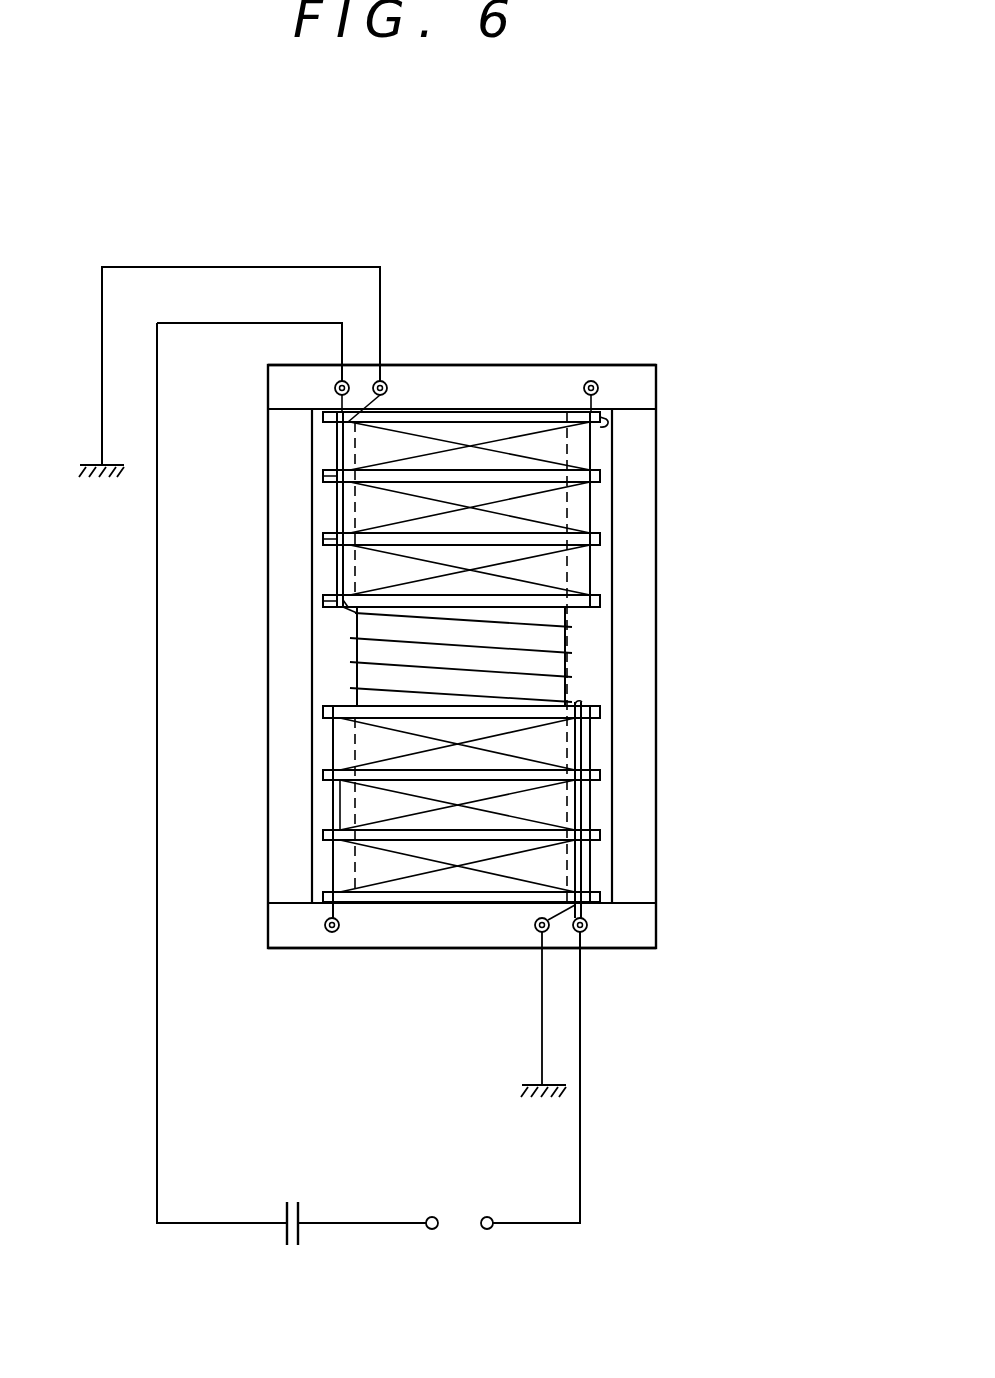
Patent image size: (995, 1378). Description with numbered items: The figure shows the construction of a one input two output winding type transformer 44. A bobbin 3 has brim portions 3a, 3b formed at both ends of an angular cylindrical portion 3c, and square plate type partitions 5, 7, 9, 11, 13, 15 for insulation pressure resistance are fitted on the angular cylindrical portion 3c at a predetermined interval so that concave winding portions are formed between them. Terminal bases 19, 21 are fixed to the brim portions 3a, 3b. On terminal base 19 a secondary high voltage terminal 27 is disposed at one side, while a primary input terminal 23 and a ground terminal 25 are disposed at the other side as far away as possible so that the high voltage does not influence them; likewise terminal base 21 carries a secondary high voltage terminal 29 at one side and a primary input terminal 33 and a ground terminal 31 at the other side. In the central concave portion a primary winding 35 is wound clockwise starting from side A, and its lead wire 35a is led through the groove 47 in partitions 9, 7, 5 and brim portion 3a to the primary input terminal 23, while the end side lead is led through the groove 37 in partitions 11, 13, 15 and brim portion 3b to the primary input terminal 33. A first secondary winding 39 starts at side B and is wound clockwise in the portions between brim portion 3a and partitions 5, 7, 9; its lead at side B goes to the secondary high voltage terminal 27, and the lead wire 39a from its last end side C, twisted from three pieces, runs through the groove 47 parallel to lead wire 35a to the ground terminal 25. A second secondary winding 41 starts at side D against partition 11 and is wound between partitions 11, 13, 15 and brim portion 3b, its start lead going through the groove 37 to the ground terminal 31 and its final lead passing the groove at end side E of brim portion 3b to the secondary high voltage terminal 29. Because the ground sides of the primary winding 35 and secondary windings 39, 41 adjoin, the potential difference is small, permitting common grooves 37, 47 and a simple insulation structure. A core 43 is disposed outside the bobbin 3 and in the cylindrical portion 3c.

The bobbin 3 is at (565, 570).
The brim portion 3a is at (533, 410).
The brim portion 3b is at (427, 905).
The angular cylindrical portion 3c is at (355, 675).
The partition 5 is at (600, 478).
The partition 7 is at (600, 541).
The partition 9 is at (600, 608).
The partition 11 is at (600, 713).
The partition 13 is at (603, 775).
The partition 15 is at (585, 833).
The terminal base 19 is at (503, 377).
The terminal base 21 is at (355, 942).
The primary input terminal 23 is at (339, 382).
The ground terminal 25 is at (385, 383).
The secondary high voltage terminal 27 is at (592, 381).
The secondary high voltage terminal 29 is at (325, 925).
The ground terminal 31 is at (538, 932).
The primary input terminal 33 is at (588, 932).
The primary winding 35 is at (533, 672).
The lead wire 35a is at (343, 455).
The groove 37 is at (588, 780).
The first secondary winding 39 is at (555, 508).
The lead wire 39a is at (345, 455).
The second secondary winding 41 is at (345, 810).
The core 43 is at (285, 758).
The winding type transformer 44 is at (657, 325).
The groove 47 is at (323, 475).
The winding start end side A is at (350, 607).
The winding end side B is at (603, 417).
The last end side C is at (345, 602).
The winding start end side D is at (588, 720).
The other end side E is at (355, 890).